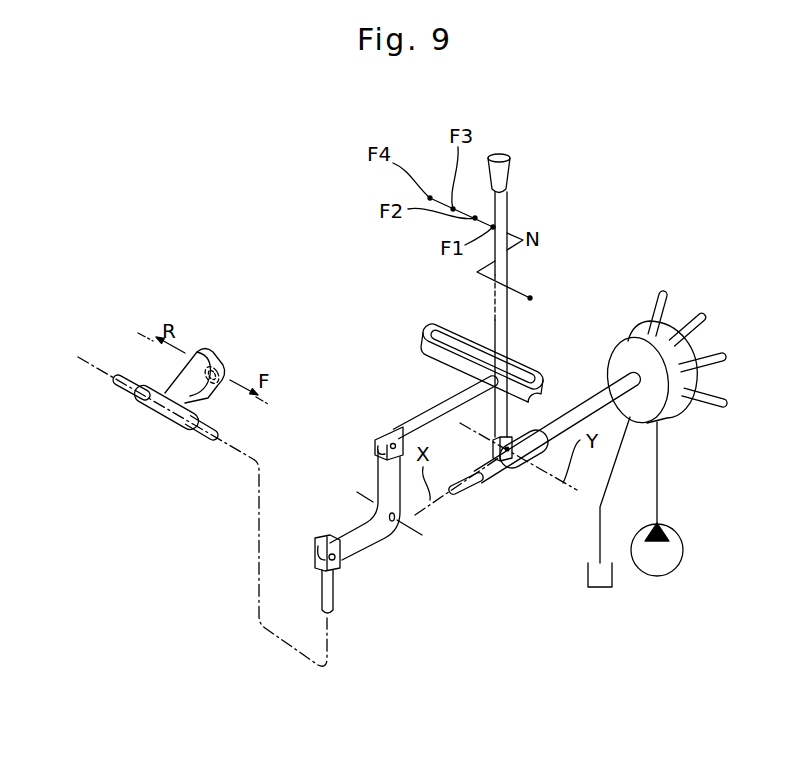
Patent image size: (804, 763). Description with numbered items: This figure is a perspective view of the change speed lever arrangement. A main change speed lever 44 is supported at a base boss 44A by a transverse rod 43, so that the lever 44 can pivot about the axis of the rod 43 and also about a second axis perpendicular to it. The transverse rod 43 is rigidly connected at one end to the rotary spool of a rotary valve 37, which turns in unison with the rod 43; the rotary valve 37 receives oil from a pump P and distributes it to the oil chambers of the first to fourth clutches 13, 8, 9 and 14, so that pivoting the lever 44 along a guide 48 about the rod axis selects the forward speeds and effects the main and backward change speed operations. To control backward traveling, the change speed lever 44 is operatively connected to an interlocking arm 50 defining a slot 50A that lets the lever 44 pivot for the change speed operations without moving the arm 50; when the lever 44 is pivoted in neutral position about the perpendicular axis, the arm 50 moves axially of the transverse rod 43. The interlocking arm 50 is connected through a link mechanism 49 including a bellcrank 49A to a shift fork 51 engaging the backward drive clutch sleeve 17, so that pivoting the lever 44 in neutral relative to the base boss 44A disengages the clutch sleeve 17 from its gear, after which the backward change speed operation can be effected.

The main change speed lever 44 is at (510, 178).
The base boss 44A is at (507, 472).
The guide 48 is at (478, 272).
The interlocking arm 50 is at (494, 363).
The slot 50A is at (532, 378).
The transverse rod 43 is at (473, 493).
The rotary valve 37 is at (632, 337).
The first clutch 13 is at (668, 280).
The second clutch 8 is at (707, 310).
The third clutch 9 is at (728, 353).
The fourth clutch 14 is at (732, 407).
The link mechanism 49 is at (258, 540).
The bellcrank 49A is at (373, 537).
The shift fork 51 is at (206, 353).
The backward drive clutch sleeve 17 is at (222, 362).
The pump P is at (683, 543).